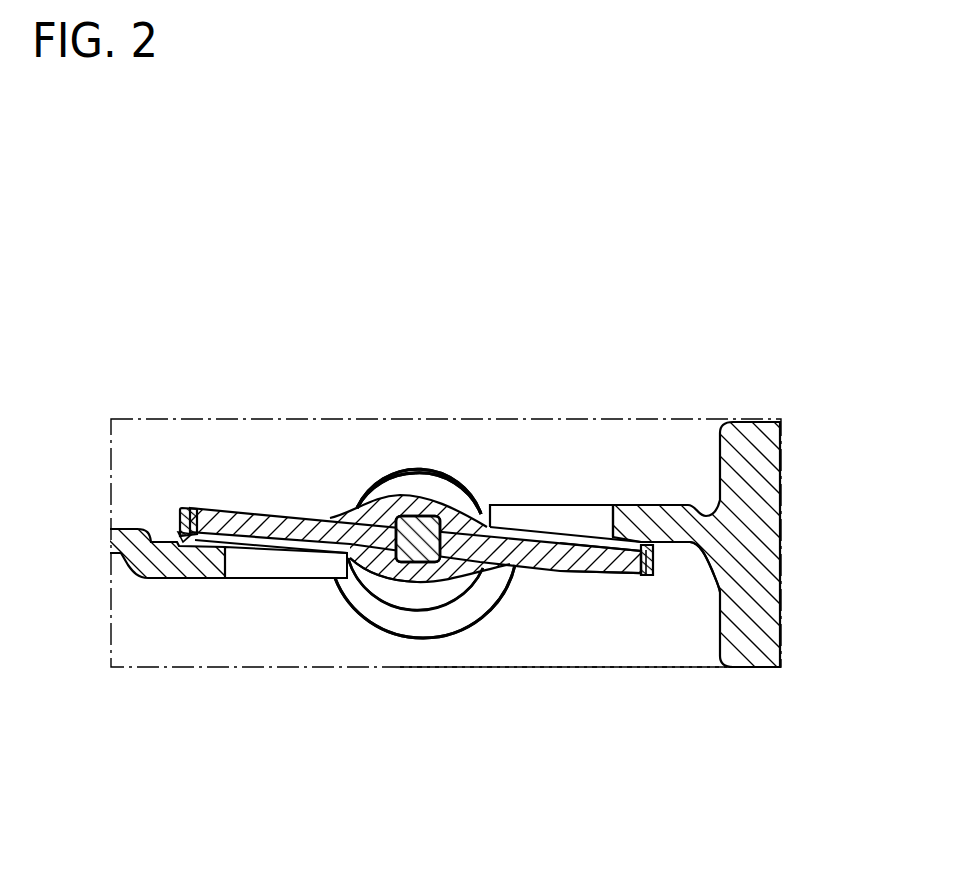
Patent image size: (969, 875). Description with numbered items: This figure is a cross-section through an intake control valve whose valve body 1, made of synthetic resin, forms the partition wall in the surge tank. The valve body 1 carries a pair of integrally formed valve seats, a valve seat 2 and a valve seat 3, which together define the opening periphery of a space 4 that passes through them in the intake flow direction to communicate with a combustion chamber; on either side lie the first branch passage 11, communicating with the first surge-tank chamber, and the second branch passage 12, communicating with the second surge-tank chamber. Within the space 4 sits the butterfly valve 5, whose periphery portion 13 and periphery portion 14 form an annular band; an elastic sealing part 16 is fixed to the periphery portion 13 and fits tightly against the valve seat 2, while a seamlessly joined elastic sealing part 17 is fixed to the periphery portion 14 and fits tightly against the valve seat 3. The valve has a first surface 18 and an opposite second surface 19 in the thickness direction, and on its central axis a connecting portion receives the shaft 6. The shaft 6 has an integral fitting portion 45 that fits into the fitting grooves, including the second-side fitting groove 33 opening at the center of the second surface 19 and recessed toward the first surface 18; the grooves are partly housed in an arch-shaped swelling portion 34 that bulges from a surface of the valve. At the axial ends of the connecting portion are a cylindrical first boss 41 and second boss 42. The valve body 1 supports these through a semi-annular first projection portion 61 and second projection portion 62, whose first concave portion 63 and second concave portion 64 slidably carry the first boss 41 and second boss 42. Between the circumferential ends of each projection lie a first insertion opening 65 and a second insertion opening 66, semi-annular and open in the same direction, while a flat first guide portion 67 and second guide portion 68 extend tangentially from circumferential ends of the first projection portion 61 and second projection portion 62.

The valve body 1 is at (780, 443).
The valve seat 2 is at (166, 528).
The valve seat 3 is at (670, 543).
The space 4 is at (562, 515).
The butterfly valve 5 is at (300, 517).
The shaft 6 is at (428, 530).
The first branch passage 11 is at (637, 443).
The second branch passage 12 is at (527, 632).
The periphery portion 13 is at (207, 510).
The periphery portion 14 is at (630, 574).
The elastic sealing part 16 is at (182, 512).
The elastic sealing part 17 is at (650, 577).
The first surface 18 is at (263, 513).
The second surface 19 is at (257, 556).
The second-side fitting groove 33 is at (375, 568).
The swelling portion 34 is at (401, 503).
The first boss 41 is at (412, 505).
The second boss 42 is at (419, 384).
The fitting portion 45 is at (463, 427).
The first projection portion 61 is at (405, 620).
The second projection portion 62 is at (405, 696).
The first concave portion 63 is at (398, 602).
The second concave portion 64 is at (422, 706).
The first insertion opening 65 is at (380, 492).
The second insertion opening 66 is at (375, 364).
The first guide portion 67 is at (485, 507).
The second guide portion 68 is at (501, 424).